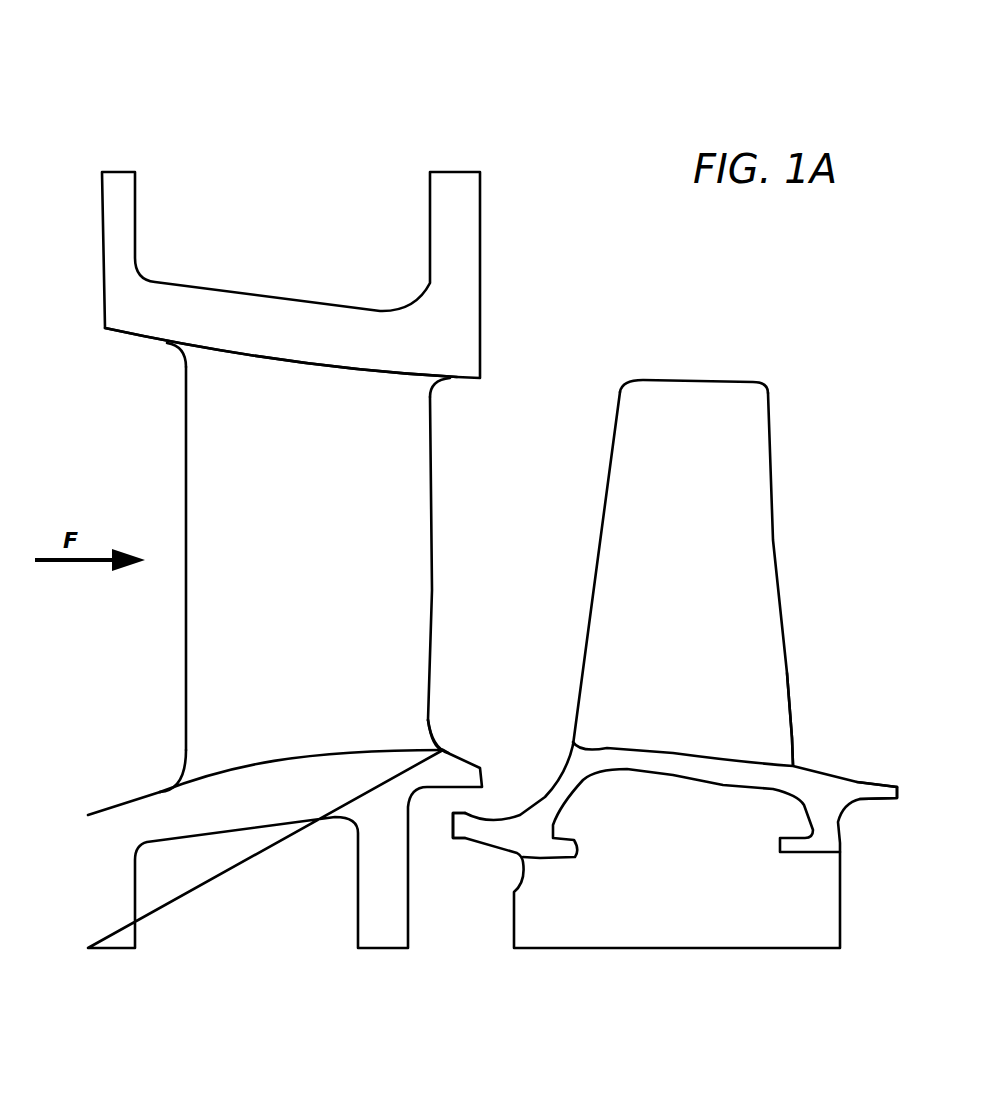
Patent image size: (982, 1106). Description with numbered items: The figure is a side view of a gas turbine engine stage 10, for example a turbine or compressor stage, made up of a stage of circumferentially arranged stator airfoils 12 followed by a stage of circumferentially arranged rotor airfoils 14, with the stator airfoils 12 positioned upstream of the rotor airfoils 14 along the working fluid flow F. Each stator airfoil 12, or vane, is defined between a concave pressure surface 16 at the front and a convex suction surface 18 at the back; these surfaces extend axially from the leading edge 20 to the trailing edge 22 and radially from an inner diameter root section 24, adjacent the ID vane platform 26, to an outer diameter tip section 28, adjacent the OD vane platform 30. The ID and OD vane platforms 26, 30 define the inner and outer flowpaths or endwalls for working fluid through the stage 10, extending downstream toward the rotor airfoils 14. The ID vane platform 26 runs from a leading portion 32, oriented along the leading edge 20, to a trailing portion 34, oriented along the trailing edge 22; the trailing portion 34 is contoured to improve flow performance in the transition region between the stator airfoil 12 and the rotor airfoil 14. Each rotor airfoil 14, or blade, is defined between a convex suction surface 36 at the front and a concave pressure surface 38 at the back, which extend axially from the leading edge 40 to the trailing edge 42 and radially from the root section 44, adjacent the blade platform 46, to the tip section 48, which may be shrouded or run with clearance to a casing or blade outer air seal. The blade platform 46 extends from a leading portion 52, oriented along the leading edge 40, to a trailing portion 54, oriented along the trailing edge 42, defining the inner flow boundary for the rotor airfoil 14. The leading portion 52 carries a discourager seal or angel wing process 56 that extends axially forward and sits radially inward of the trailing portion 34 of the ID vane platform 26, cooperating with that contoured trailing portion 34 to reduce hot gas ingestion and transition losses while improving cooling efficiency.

The gas turbine engine stage 10 is at (113, 104).
The stator airfoil 12 is at (266, 176).
The rotor airfoil 14 is at (621, 312).
The concave pressure surface 16 is at (278, 560).
The convex suction surface 18 is at (398, 426).
The leading edge 20 is at (186, 530).
The trailing edge 22 is at (432, 605).
The root section 24 is at (230, 732).
The ID vane platform 26 is at (223, 770).
The tip section 28 is at (225, 390).
The OD vane platform 30 is at (213, 352).
The leading portion 32 is at (263, 823).
The trailing portion 34 is at (457, 767).
The convex suction surface 36 is at (694, 554).
The concave pressure surface 38 is at (737, 450).
The leading edge 40 is at (600, 550).
The trailing edge 42 is at (780, 590).
The root section 44 is at (743, 718).
The blade platform 46 is at (775, 763).
The tip section 48 is at (747, 402).
The leading portion 52 is at (538, 815).
The trailing portion 54 is at (863, 783).
The discourager seal process 56 is at (470, 830).